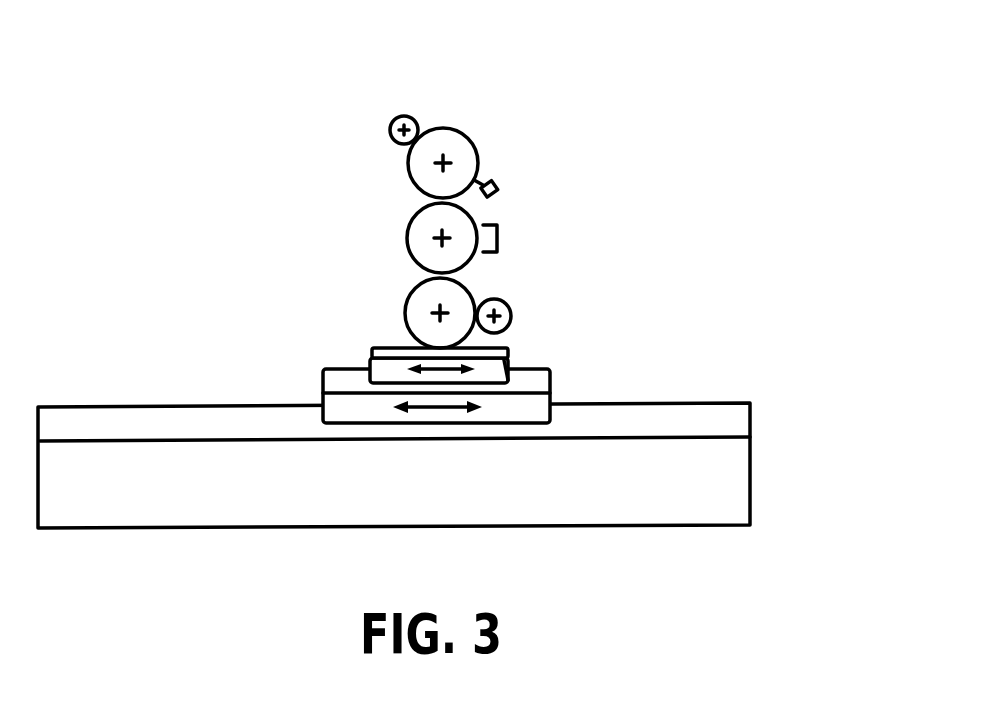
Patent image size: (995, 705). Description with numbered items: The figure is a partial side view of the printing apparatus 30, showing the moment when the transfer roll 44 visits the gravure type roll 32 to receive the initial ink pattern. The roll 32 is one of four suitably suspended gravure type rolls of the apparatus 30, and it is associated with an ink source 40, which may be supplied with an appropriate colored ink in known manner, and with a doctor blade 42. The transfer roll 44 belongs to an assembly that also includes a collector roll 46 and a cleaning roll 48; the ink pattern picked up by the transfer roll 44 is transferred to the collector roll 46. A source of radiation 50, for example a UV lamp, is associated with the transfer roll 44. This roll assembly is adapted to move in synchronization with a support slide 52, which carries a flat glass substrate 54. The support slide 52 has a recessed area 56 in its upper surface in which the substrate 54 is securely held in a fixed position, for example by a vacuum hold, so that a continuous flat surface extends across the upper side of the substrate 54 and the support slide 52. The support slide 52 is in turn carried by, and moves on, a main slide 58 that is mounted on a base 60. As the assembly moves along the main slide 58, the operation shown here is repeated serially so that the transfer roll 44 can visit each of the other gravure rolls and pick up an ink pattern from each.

The apparatus 30 is at (687, 5).
The roll 32 is at (460, 138).
The ink source 40 is at (409, 117).
The doctor blade 42 is at (497, 182).
The transfer roll 44 is at (418, 217).
The collector roll 46 is at (417, 292).
The cleaning roll 48 is at (506, 306).
The source of radiation 50 is at (503, 224).
The support slide 52 is at (505, 365).
The flat glass substrate 54 is at (407, 350).
The recessed area 56 is at (369, 352).
The main slide 58 is at (540, 405).
The base 60 is at (394, 465).